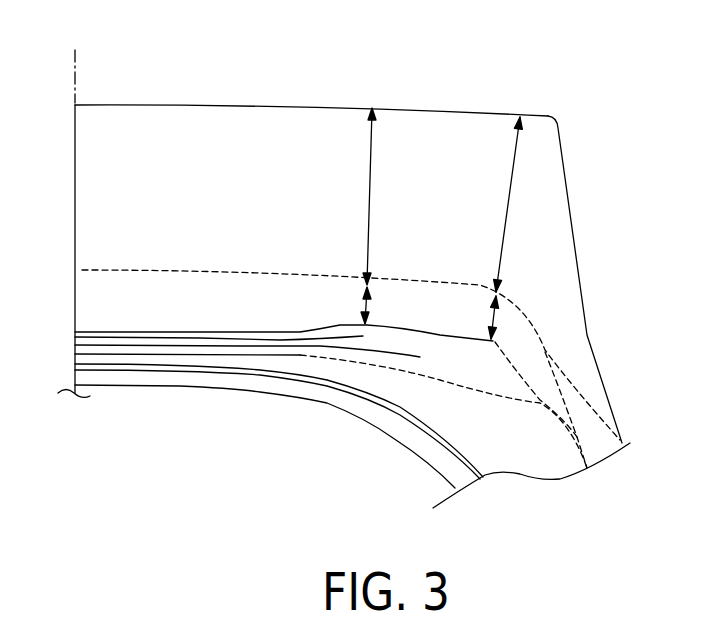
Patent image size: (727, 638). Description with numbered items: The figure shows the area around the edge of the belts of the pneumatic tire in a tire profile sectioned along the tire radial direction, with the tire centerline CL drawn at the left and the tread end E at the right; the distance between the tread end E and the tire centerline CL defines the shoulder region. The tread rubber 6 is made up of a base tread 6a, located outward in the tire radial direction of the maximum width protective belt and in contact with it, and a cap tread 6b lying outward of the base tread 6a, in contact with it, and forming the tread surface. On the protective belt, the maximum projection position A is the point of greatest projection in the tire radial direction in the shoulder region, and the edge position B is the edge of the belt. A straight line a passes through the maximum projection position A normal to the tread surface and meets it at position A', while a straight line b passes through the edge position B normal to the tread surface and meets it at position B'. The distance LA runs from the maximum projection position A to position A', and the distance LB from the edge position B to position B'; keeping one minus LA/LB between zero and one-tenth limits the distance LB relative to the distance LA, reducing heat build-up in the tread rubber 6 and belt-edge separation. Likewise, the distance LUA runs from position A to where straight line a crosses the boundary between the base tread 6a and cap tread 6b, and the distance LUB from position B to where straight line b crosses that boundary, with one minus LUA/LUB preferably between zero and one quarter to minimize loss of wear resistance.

The tread rubber 6 is at (321, 257).
The base tread 6a is at (102, 307).
The cap tread 6b is at (186, 127).
The tire centerline CL is at (74, 210).
The tread end E is at (549, 115).
The position A' is at (402, 68).
The position B' is at (548, 75).
The straight line a is at (373, 164).
The straight line b is at (513, 183).
The maximum projection position A is at (339, 306).
The edge position B is at (516, 359).
The distance LA is at (384, 196).
The distance LB is at (516, 204).
The distance LUA is at (391, 305).
The distance LUB is at (465, 317).